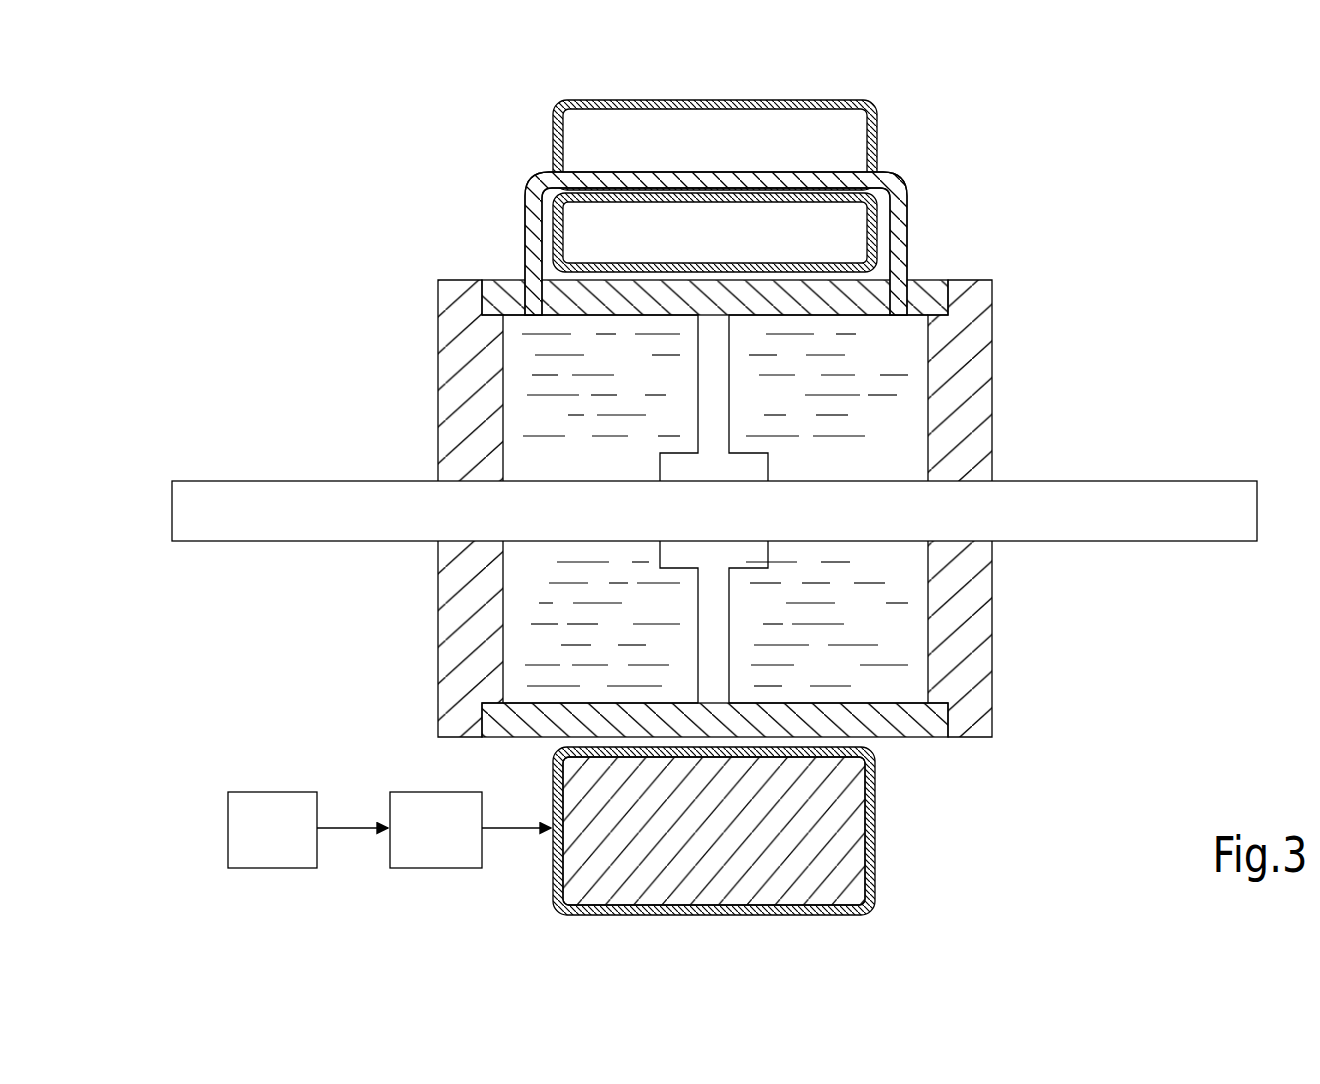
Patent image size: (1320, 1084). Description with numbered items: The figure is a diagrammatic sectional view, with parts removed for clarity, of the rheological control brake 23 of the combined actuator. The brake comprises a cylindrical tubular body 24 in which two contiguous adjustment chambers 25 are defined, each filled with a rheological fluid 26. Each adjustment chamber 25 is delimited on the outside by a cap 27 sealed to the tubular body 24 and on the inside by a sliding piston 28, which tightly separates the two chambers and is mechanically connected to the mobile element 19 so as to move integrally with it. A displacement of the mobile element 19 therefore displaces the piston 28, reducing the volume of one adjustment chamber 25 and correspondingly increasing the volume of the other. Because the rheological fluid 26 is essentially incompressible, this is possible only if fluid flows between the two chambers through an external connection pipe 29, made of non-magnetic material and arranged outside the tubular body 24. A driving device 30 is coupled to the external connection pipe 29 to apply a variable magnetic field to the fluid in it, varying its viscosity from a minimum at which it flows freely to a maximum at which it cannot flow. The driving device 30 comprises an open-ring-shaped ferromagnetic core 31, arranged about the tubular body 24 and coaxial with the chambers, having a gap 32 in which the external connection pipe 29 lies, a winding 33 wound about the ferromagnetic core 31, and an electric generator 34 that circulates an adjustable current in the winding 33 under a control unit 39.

The mobile element 19 is at (1133, 493).
The rheological control brake 23 is at (186, 762).
The tubular body 24 is at (903, 731).
The adjustment chamber 25 is at (543, 645).
The rheological fluid 26 is at (857, 368).
The cap 27 is at (440, 558).
The sliding piston 28 is at (707, 367).
The external connection pipe 29 is at (870, 186).
The driving device 30 is at (458, 139).
The ferromagnetic core 31 is at (852, 857).
The gap 32 is at (785, 96).
The winding 33 is at (768, 915).
The electric generator 34 is at (418, 840).
The control unit 39 is at (253, 840).